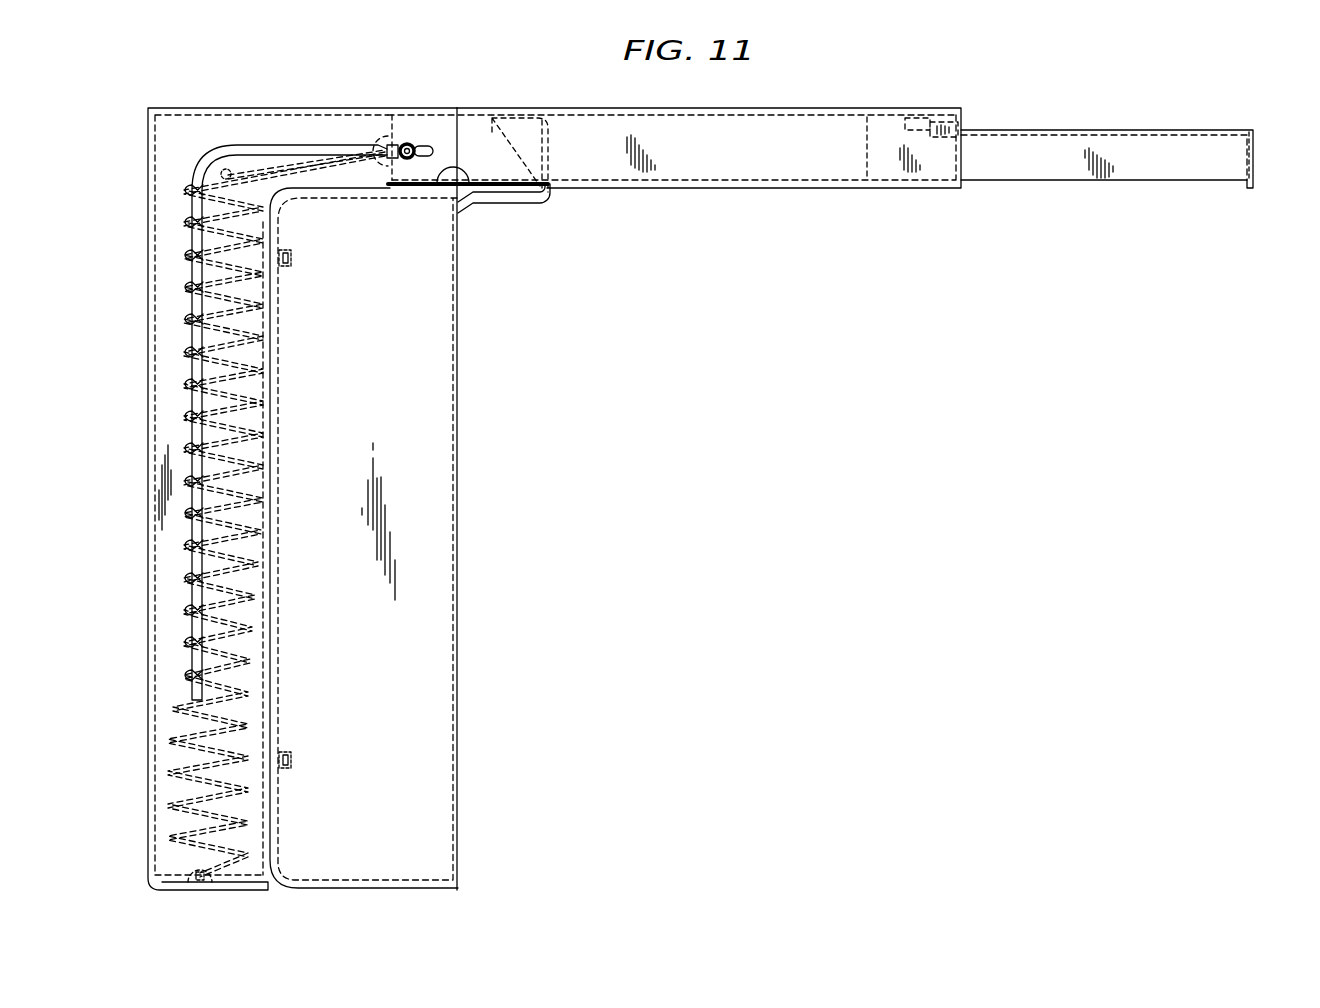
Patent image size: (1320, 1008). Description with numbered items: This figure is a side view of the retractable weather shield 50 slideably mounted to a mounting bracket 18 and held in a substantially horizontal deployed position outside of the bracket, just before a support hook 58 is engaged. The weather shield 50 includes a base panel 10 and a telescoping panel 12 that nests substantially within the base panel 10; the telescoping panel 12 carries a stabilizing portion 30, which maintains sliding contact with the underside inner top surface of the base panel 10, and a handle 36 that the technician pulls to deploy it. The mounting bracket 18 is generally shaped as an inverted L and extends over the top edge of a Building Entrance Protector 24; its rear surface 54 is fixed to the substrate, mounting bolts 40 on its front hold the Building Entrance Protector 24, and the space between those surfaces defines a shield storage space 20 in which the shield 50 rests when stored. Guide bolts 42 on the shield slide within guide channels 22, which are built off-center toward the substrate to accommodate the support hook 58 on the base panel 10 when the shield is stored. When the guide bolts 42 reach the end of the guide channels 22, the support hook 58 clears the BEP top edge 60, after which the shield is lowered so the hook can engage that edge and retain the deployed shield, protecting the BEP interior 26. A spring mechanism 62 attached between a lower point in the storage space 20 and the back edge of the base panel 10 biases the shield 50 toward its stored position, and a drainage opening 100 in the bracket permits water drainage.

The base panel 10 is at (638, 108).
The telescoping panel 12 is at (1086, 130).
The mounting bracket 18 is at (134, 201).
The shield storage space 20 is at (250, 710).
The guide channels 22 is at (193, 277).
The Building Entrance Protector 24 is at (387, 887).
The BEP interior 26 is at (433, 566).
The stabilizing portion 30 is at (885, 116).
The handle 36 is at (1255, 159).
The mounting bolts 40 is at (294, 258).
The guide bolts 42 is at (402, 142).
The weather shield 50 is at (766, 91).
The rear surface 54 is at (148, 556).
The support hook 58 is at (517, 203).
The BEP top edge 60 is at (467, 181).
The spring mechanism 62 is at (190, 385).
The drainage opening 100 is at (245, 880).